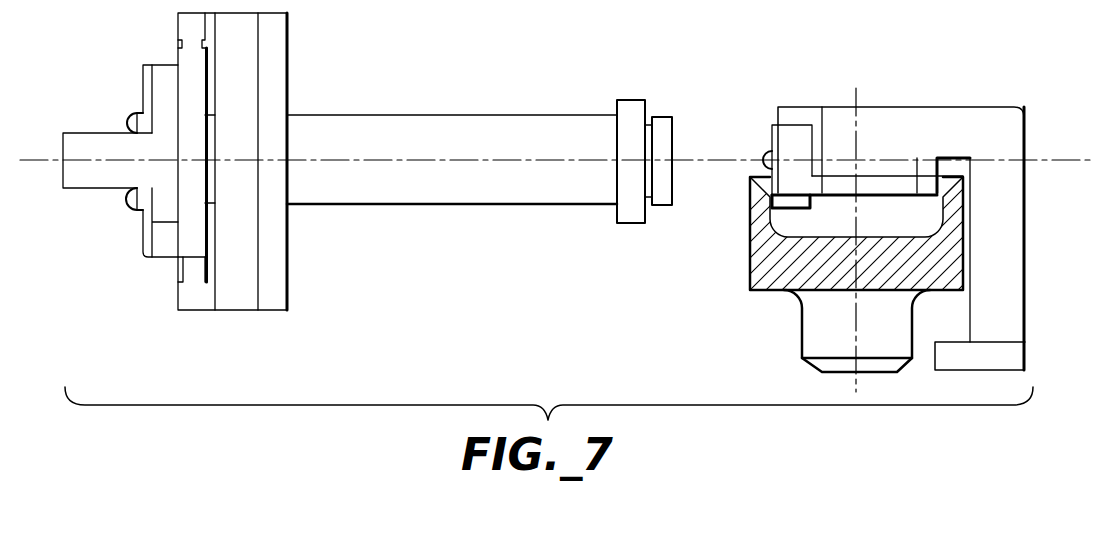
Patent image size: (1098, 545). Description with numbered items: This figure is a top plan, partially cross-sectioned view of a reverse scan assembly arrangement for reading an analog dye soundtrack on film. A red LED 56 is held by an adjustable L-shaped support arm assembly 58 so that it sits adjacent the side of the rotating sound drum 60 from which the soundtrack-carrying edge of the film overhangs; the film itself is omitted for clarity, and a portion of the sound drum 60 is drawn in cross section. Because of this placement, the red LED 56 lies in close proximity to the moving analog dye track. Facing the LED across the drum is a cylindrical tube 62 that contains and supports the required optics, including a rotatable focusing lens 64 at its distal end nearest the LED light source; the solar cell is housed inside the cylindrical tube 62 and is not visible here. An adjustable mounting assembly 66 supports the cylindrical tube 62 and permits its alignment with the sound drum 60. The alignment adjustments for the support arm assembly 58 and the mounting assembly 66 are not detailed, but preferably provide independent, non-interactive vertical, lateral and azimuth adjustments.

The red LED 56 is at (768, 152).
The L-shaped support arm assembly 58 is at (995, 106).
The sound drum 60 is at (765, 292).
The cylindrical tube 62 is at (430, 205).
The rotatable focusing lens 64 is at (632, 223).
The adjustable mounting assembly 66 is at (245, 310).